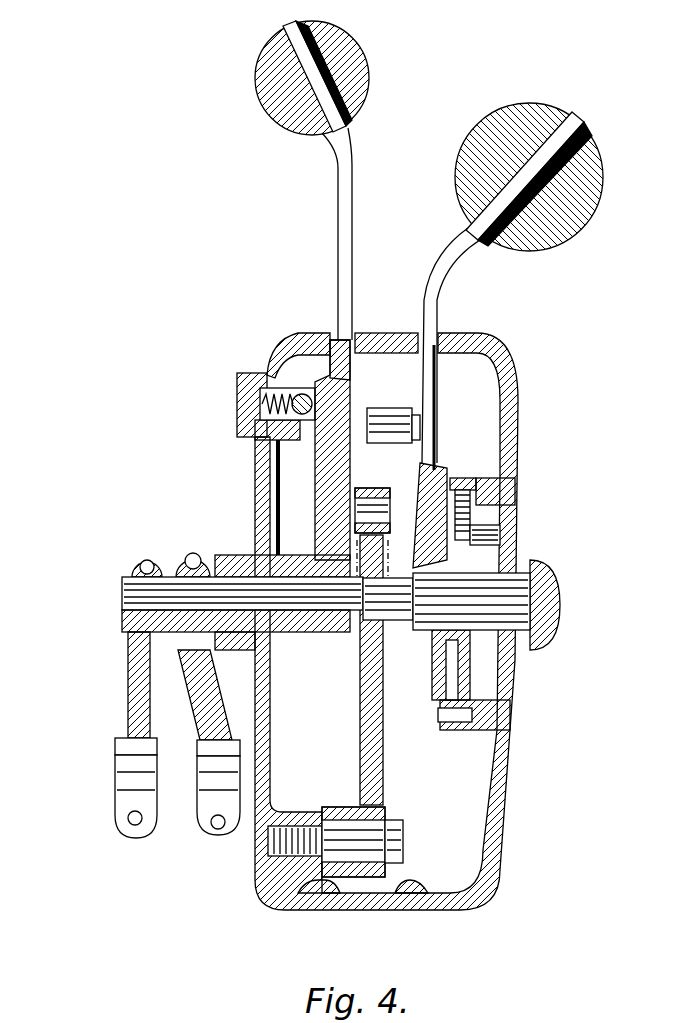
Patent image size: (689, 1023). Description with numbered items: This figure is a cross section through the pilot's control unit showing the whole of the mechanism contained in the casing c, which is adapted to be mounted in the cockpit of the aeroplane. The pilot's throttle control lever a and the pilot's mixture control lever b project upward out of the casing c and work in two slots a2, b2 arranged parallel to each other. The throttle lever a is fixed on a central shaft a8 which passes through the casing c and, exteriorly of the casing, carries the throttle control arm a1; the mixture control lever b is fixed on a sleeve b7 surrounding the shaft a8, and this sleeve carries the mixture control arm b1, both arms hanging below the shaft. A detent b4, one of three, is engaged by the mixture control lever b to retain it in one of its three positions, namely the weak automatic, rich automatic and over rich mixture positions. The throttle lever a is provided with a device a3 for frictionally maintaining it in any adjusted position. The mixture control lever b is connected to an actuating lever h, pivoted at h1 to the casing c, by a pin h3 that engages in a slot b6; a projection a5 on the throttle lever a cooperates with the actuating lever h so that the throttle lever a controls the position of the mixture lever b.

The throttle control lever a is at (455, 248).
The throttle control arm a1 is at (135, 715).
The slot a2 is at (437, 340).
The friction device a3 is at (470, 520).
The projection a5 is at (383, 420).
The central shaft a8 is at (122, 592).
The mixture control lever b is at (337, 220).
The mixture control arm b1 is at (212, 833).
The slot b2 is at (335, 340).
The detent b4 is at (275, 385).
The slot b6 is at (315, 480).
The sleeve b7 is at (237, 577).
The casing c is at (502, 778).
The actuating lever h is at (383, 755).
The pivot h1 is at (350, 835).
The pin h3 is at (348, 500).